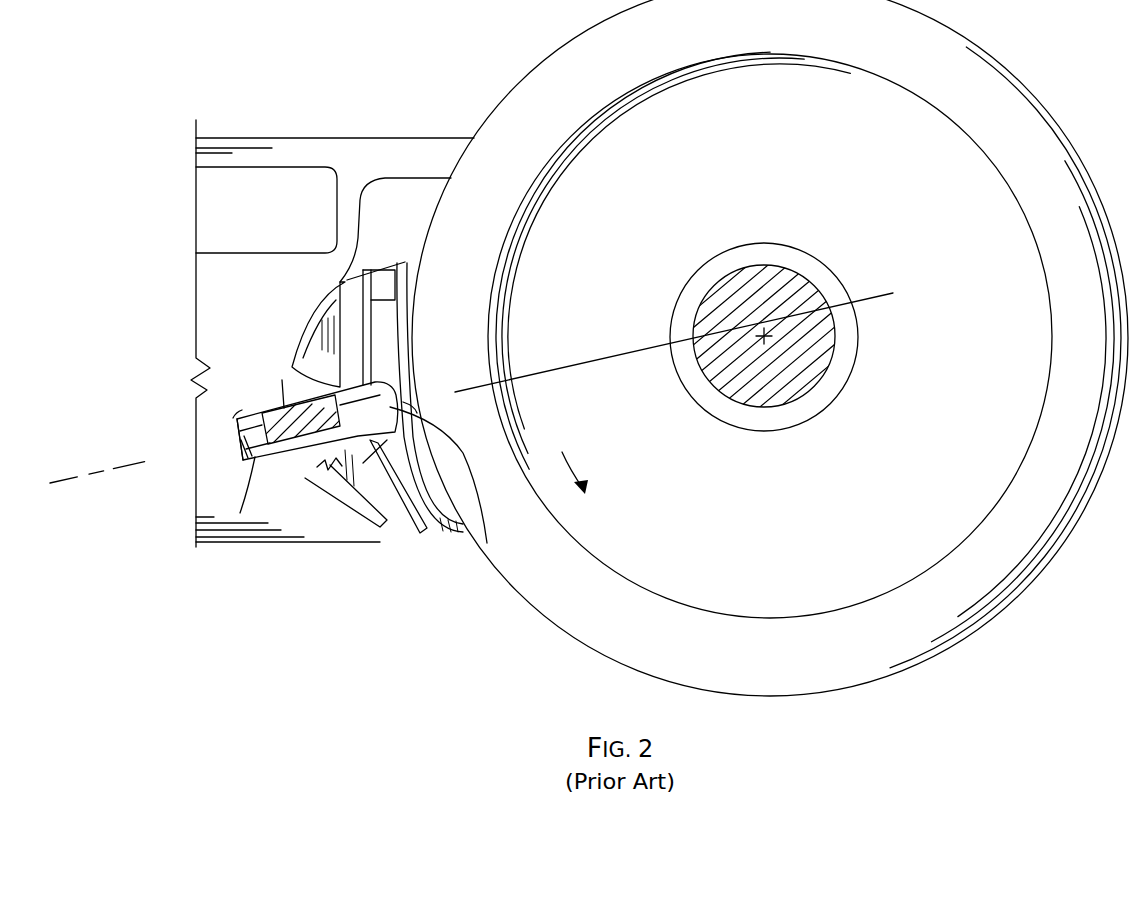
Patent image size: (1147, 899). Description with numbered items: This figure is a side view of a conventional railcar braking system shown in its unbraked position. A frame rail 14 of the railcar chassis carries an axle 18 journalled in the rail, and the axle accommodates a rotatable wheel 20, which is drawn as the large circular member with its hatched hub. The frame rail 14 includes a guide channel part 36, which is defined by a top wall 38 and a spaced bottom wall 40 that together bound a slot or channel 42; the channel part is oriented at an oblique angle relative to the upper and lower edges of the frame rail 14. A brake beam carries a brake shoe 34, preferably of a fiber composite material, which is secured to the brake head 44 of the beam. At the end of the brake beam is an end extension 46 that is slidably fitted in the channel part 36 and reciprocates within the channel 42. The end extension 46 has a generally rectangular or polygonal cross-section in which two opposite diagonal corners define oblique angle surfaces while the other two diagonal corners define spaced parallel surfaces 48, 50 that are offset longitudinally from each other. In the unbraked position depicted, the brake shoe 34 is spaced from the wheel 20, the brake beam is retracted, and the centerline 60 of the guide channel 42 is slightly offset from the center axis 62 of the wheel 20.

The frame rail 14 is at (405, 156).
The axle 18 is at (791, 281).
The wheel 20 is at (1033, 131).
The brake shoe 34 is at (388, 278).
The guide channel part 36 is at (261, 392).
The top wall 38 is at (240, 413).
The bottom wall 40 is at (240, 513).
The channel 42 is at (487, 543).
The brake head 44 is at (340, 292).
The end extension 46 is at (237, 437).
The parallel surface 48 is at (290, 405).
The parallel surface 50 is at (348, 430).
The centerline 60 is at (650, 345).
The center axis 62 is at (766, 340).